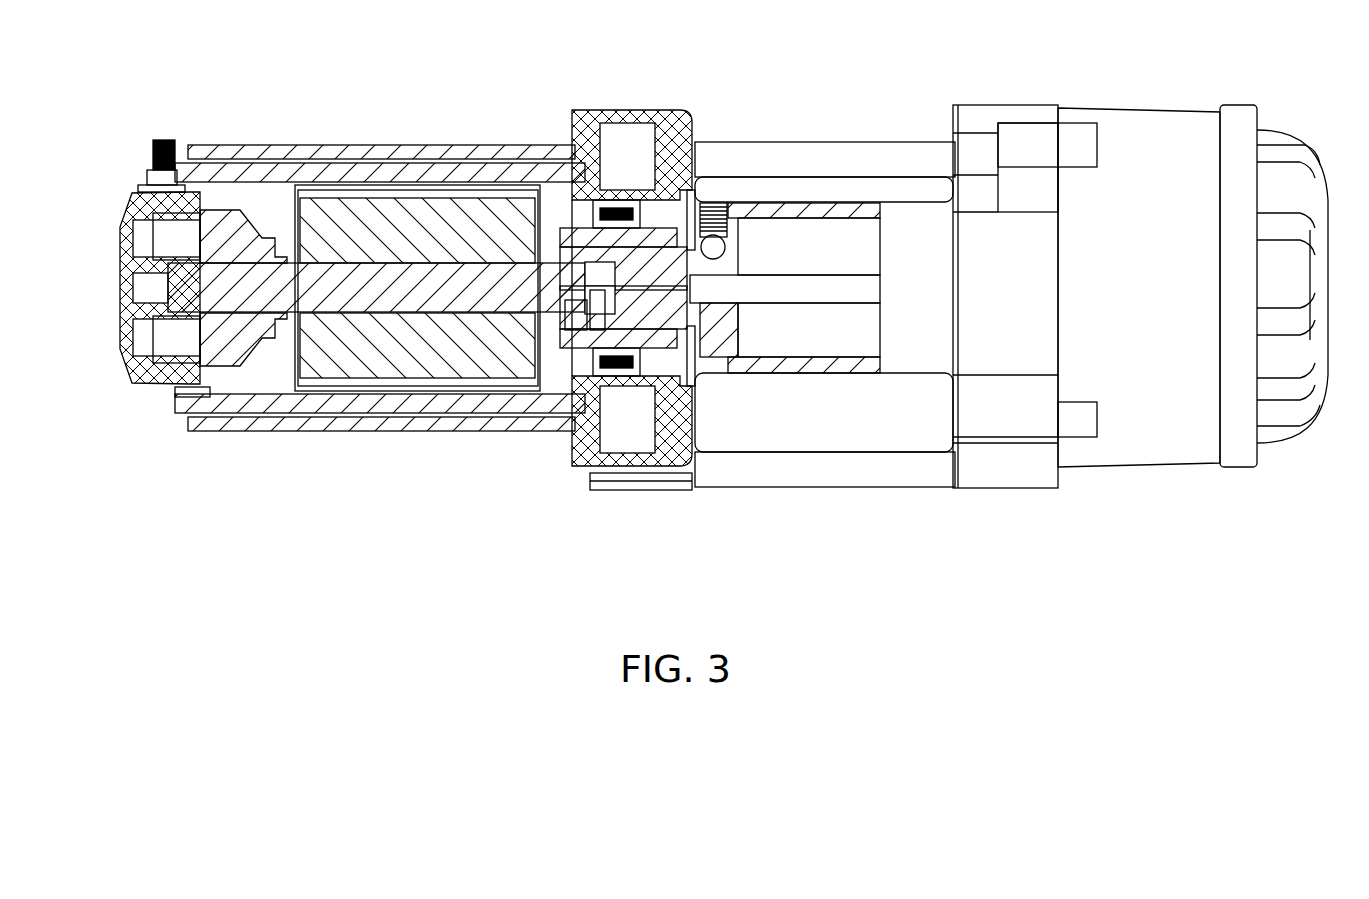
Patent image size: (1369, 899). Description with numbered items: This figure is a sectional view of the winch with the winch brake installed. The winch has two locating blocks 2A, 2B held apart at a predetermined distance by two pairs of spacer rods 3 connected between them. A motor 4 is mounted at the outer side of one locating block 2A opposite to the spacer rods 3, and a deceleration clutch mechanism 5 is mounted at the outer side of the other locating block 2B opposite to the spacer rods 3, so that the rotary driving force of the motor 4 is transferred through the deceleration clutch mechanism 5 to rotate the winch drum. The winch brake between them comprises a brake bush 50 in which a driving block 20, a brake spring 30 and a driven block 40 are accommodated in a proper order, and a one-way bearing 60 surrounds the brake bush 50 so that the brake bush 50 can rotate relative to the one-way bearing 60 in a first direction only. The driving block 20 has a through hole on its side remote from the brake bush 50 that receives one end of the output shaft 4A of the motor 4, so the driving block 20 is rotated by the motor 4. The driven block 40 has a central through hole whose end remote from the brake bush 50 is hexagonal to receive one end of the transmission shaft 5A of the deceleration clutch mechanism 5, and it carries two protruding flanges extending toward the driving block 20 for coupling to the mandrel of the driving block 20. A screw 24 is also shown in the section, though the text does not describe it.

The locating block 2A is at (658, 110).
The locating block 2B is at (983, 117).
The spacer rods 3 is at (887, 152).
The motor 4 is at (359, 147).
The output shaft 4A is at (578, 212).
The deceleration clutch mechanism 5 is at (1142, 138).
The transmission shaft 5A is at (812, 285).
The driving block 20 is at (578, 340).
The screw 24 is at (705, 205).
The brake spring 30 is at (605, 330).
The driven block 40 is at (693, 330).
The brake bush 50 is at (567, 226).
The one-way bearing 60 is at (618, 208).